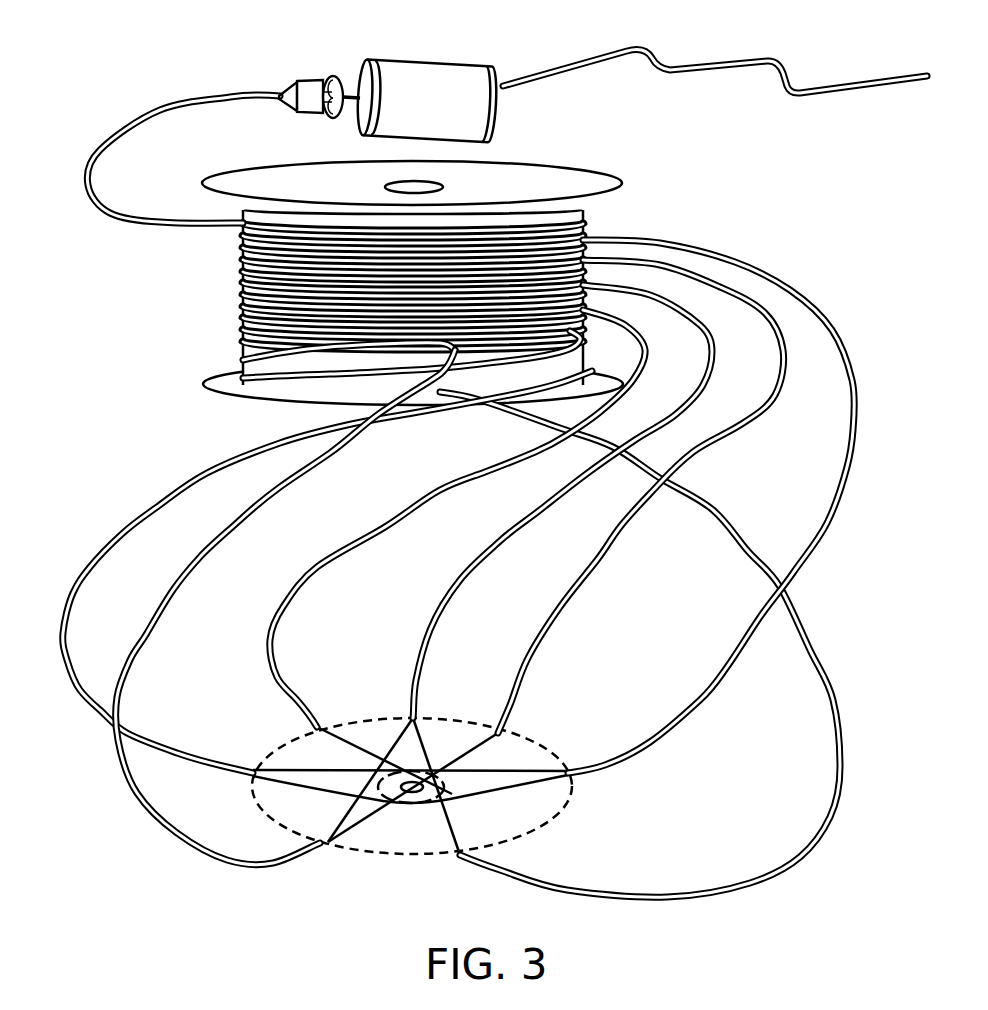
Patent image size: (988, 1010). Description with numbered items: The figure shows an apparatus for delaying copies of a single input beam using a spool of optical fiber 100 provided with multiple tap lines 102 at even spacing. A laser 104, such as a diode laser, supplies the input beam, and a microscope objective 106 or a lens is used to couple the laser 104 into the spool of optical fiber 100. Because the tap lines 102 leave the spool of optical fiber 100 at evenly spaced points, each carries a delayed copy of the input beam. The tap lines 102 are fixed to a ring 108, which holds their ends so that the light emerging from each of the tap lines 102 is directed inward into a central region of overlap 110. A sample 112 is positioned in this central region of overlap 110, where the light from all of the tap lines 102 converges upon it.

The spool of optical fiber 100 is at (593, 158).
The tap lines 102 is at (495, 474).
The laser 104 is at (437, 64).
The microscope objective 106 is at (313, 69).
The ring 108 is at (568, 819).
The central region of overlap 110 is at (434, 793).
The sample 112 is at (410, 791).